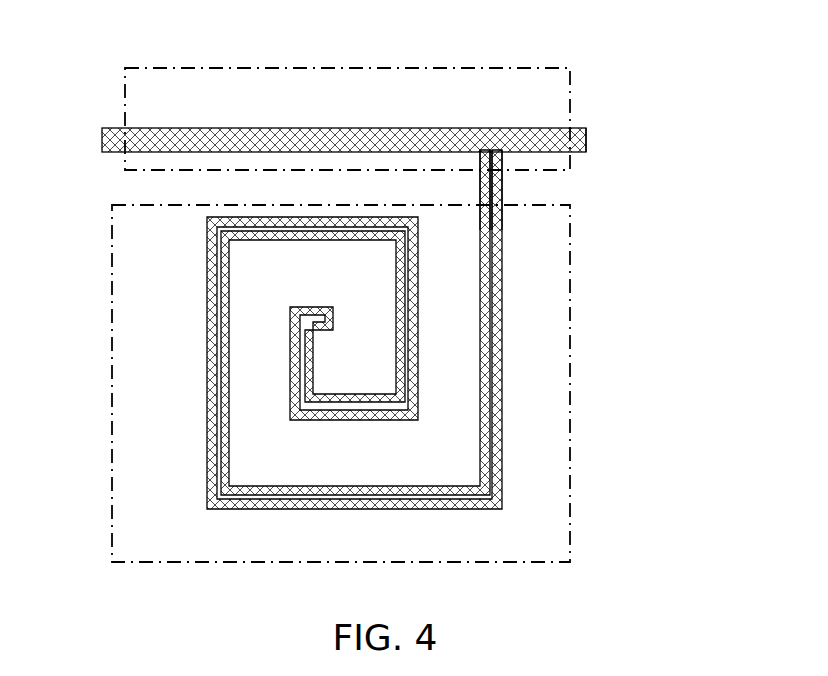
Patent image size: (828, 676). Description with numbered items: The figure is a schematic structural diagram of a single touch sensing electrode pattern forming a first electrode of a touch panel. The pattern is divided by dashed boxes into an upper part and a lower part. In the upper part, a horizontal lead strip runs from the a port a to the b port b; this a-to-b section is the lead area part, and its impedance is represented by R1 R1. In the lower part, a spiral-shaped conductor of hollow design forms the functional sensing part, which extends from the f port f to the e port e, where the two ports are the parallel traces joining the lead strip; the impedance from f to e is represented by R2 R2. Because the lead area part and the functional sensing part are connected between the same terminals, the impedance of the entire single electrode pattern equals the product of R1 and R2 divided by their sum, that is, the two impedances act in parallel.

The a port a is at (102, 133).
The b port b is at (586, 143).
The e port e is at (503, 160).
The f port f is at (479, 163).
The impedance of lead area part R1 is at (570, 383).
The impedance of functional sensing part R2 is at (570, 118).